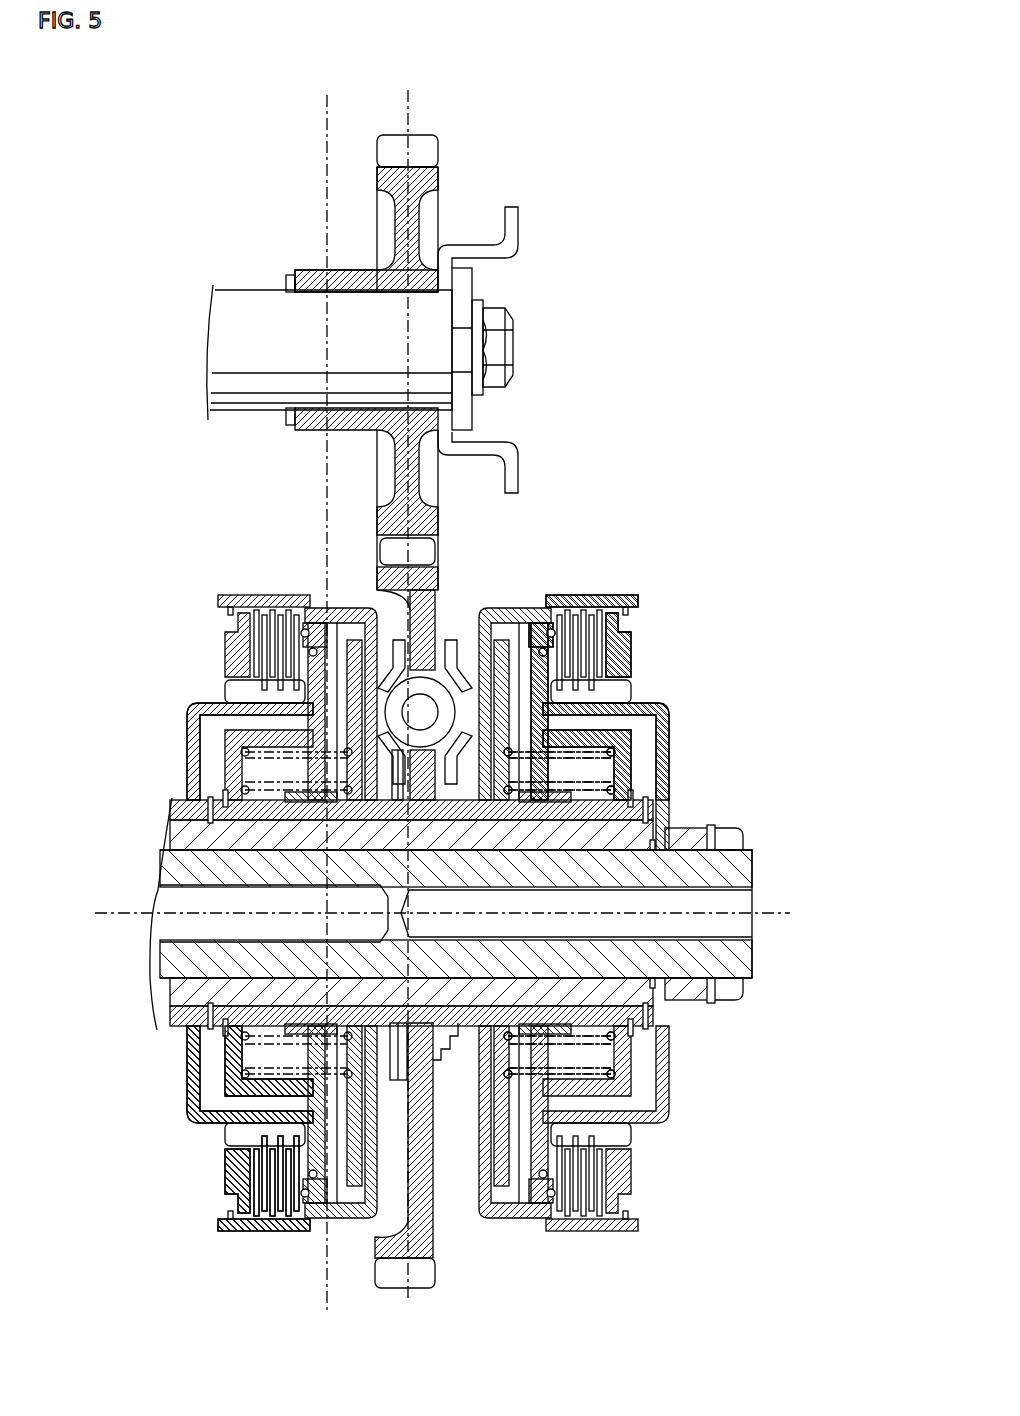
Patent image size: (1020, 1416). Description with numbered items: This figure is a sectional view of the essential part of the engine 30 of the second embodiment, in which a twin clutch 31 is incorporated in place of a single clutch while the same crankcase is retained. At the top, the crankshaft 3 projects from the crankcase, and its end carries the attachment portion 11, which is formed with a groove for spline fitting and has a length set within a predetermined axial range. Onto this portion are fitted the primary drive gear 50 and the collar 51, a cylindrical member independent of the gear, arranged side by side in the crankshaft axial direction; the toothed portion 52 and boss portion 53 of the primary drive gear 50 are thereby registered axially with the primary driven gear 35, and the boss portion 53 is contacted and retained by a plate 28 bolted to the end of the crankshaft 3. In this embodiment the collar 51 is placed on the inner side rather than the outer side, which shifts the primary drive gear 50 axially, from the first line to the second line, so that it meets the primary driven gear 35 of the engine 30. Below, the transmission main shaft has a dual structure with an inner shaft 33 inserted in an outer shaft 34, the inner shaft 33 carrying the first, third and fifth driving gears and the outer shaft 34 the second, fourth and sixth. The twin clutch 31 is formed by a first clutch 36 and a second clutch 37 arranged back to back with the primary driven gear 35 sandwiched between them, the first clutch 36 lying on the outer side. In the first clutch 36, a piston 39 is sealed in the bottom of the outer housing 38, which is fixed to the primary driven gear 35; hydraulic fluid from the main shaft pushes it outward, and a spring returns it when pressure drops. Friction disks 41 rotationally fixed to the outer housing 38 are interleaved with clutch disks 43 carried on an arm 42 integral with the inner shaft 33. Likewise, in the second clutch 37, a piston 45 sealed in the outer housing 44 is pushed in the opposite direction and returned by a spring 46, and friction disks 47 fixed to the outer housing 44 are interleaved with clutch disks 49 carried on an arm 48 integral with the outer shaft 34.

The crankshaft 3 is at (311, 351).
The attachment portion 11 is at (268, 383).
The plate 28 is at (513, 222).
The engine 30 is at (449, 920).
The twin clutch 31 is at (633, 678).
The inner shaft 33 is at (745, 858).
The outer shaft 34 is at (172, 842).
The primary driven gear 35 is at (440, 600).
The first clutch 36 is at (672, 750).
The second clutch 37 is at (185, 728).
The outer housing 38 is at (568, 600).
The piston 39 is at (518, 628).
The friction disks 41 is at (598, 612).
The arm 42 is at (668, 712).
The clutch disks 43 is at (605, 660).
The outer housing 44 is at (290, 1228).
The piston 45 is at (343, 1200).
The spring 46 is at (263, 1103).
The friction disks 47 is at (265, 1212).
The arm 48 is at (185, 1078).
The clutch disks 49 is at (253, 1178).
The primary drive gear 50 is at (409, 344).
The collar 51 is at (302, 268).
The toothed portion 52 is at (434, 150).
The boss portion 53 is at (465, 282).